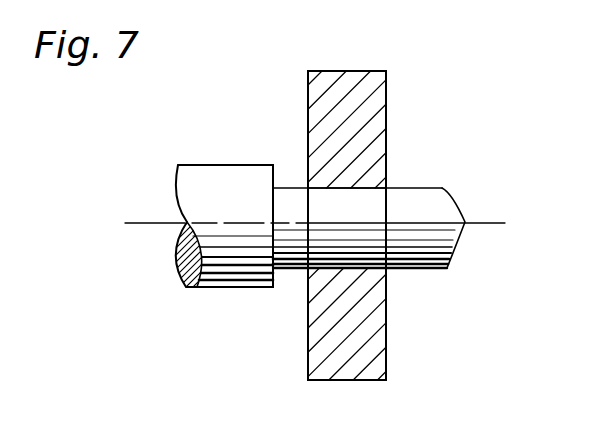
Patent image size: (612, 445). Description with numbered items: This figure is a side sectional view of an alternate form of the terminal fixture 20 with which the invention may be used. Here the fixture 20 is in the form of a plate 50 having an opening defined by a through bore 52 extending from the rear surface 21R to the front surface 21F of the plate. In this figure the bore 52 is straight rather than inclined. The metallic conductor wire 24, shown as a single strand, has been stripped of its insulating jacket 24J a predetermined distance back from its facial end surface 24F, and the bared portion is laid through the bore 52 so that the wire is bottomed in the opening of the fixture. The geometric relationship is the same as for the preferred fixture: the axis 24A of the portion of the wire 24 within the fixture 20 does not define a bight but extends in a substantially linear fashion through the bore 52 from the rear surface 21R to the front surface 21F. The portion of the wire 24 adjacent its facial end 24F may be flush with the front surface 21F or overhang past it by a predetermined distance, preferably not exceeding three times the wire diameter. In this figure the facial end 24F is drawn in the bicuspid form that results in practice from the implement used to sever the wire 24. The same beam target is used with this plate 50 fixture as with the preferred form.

The terminal fixture 20 is at (407, 82).
The plate 50 is at (334, 77).
The rear surface 21R is at (308, 112).
The front surface 21F is at (458, 122).
The through bore 52 is at (346, 268).
The metallic conductor wire 24 is at (403, 184).
The axis 24A is at (320, 223).
The facial end surface 24F is at (537, 200).
The insulating jacket 24J is at (212, 170).